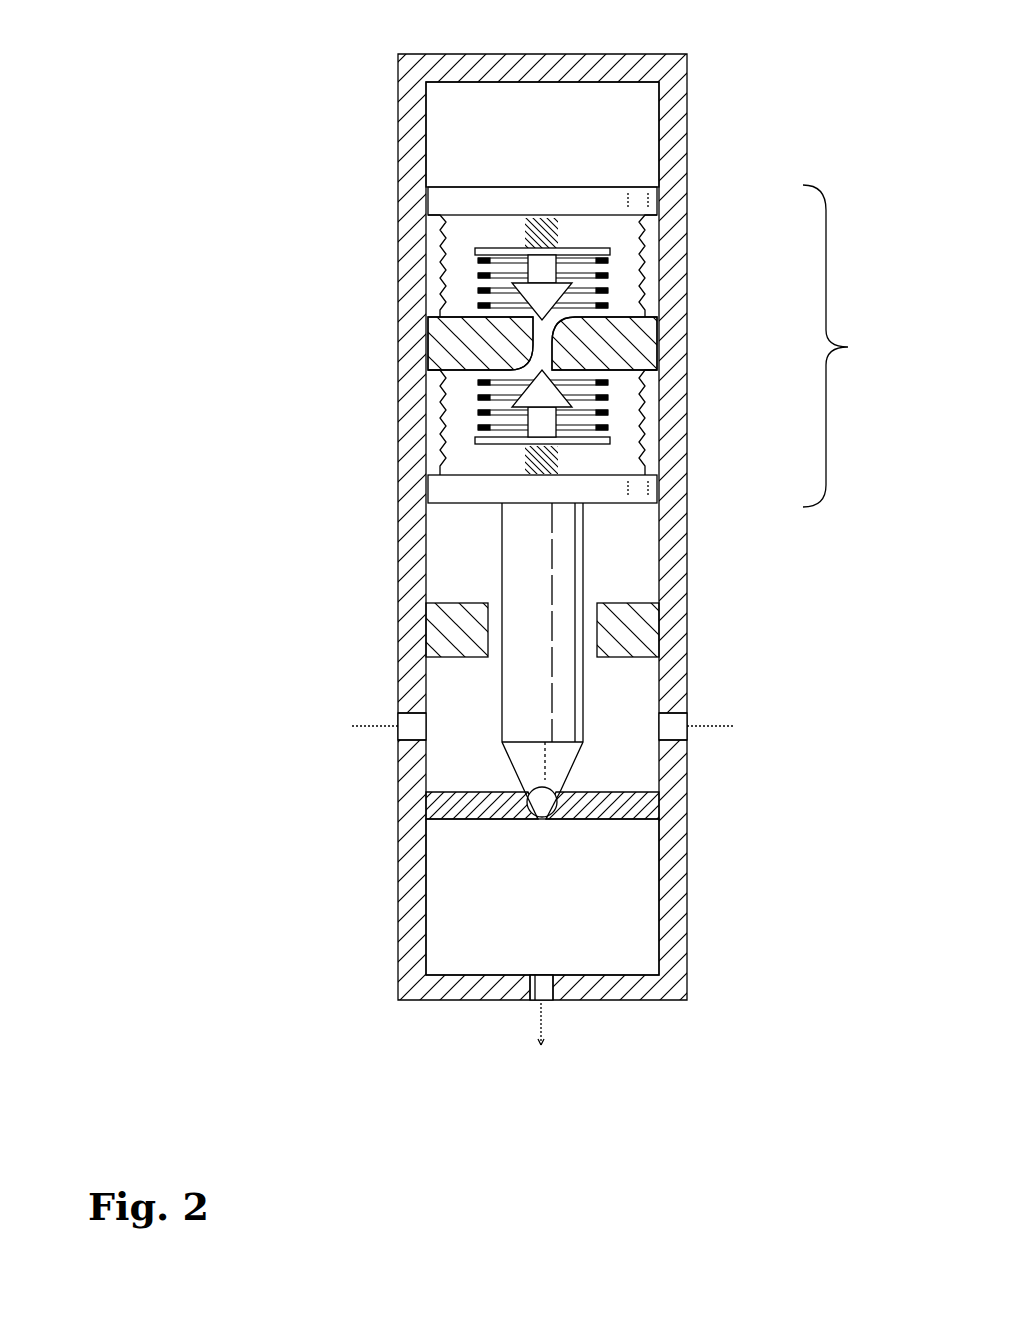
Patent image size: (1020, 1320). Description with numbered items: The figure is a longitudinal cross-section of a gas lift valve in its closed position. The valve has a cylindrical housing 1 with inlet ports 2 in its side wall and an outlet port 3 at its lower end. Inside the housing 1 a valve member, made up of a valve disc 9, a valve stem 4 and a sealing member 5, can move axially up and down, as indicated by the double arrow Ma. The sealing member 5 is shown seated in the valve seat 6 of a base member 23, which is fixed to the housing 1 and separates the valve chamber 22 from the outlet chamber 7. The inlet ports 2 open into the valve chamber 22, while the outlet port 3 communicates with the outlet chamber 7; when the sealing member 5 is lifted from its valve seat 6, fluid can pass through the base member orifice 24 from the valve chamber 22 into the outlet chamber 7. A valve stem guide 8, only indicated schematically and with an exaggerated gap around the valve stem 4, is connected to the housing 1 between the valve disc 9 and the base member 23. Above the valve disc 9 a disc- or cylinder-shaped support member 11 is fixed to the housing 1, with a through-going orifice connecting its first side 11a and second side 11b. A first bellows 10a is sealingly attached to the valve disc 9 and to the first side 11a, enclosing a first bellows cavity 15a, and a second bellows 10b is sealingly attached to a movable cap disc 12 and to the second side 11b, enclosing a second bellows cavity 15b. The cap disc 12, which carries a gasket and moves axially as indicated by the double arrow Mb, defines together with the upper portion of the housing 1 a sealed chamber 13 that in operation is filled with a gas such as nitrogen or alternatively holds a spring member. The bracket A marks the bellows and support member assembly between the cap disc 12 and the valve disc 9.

The housing 1 is at (670, 48).
The inlet ports 2 is at (395, 714).
The outlet port 3 is at (535, 1004).
The valve stem 4 is at (585, 695).
The sealing member 5 is at (565, 796).
The valve seat 6 is at (526, 820).
The outlet chamber 7 is at (542, 897).
The valve stem guide 8 is at (482, 587).
The valve disc 9 is at (640, 507).
The first bellows 10a is at (650, 459).
The second bellows 10b is at (650, 247).
The support member 11 is at (650, 333).
The support member first side 11a is at (628, 373).
The support member second side 11b is at (453, 313).
The cap disc 12 is at (602, 183).
The sealed chamber 13 is at (542, 134).
The first bellows cavity 15a is at (531, 422).
The second bellows cavity 15b is at (534, 269).
The valve chamber 22 is at (551, 656).
The base member 23 is at (620, 822).
The base member orifice 24 is at (550, 822).
The actuator assembly A is at (841, 346).